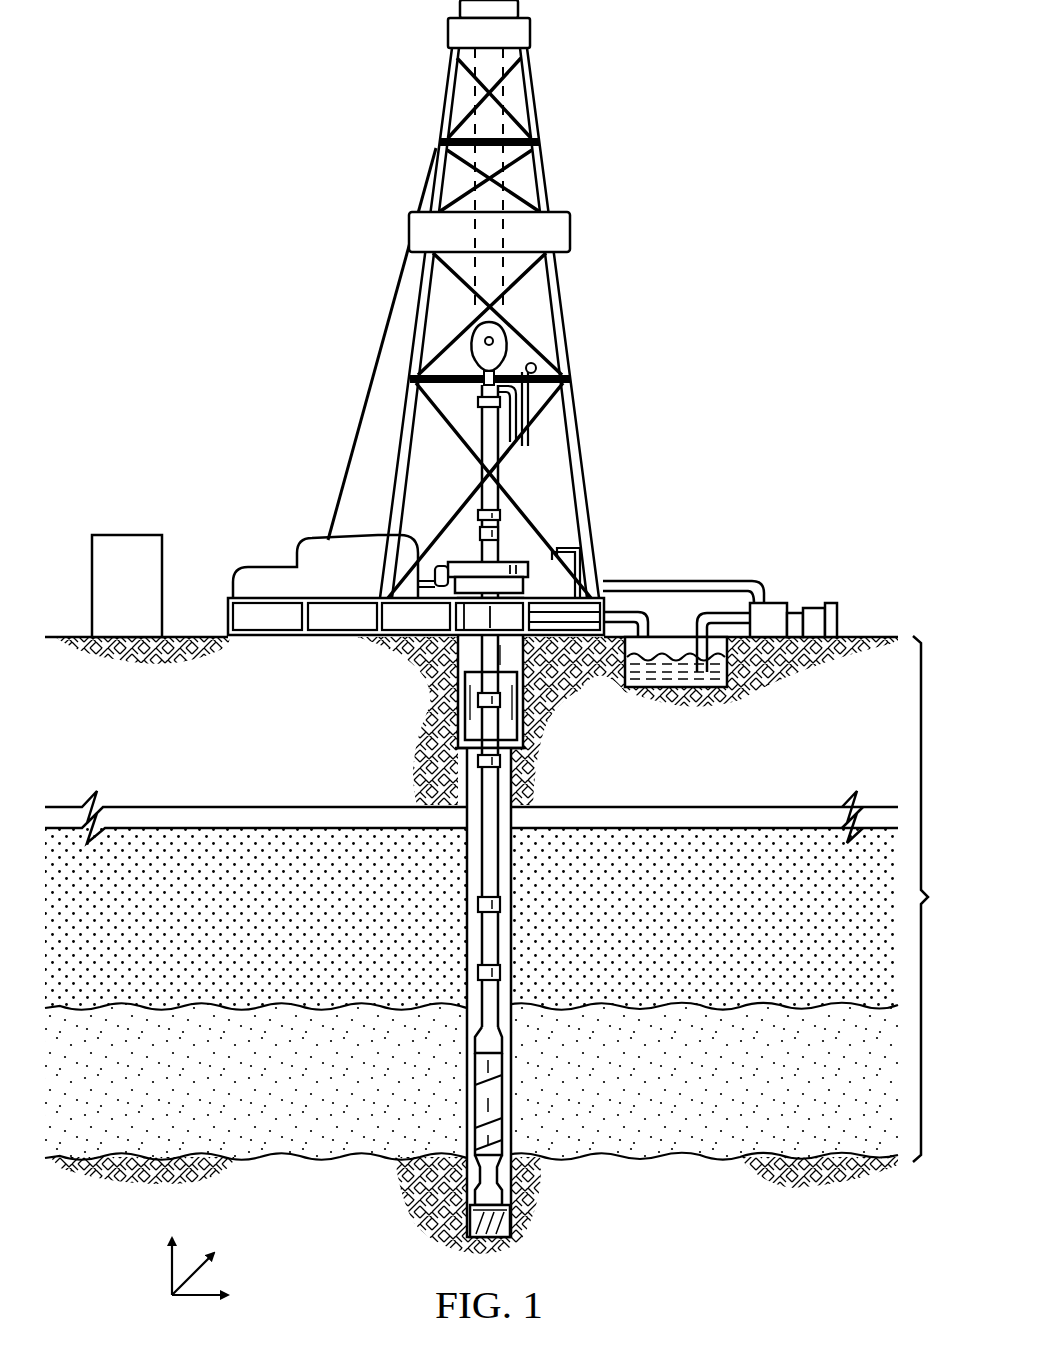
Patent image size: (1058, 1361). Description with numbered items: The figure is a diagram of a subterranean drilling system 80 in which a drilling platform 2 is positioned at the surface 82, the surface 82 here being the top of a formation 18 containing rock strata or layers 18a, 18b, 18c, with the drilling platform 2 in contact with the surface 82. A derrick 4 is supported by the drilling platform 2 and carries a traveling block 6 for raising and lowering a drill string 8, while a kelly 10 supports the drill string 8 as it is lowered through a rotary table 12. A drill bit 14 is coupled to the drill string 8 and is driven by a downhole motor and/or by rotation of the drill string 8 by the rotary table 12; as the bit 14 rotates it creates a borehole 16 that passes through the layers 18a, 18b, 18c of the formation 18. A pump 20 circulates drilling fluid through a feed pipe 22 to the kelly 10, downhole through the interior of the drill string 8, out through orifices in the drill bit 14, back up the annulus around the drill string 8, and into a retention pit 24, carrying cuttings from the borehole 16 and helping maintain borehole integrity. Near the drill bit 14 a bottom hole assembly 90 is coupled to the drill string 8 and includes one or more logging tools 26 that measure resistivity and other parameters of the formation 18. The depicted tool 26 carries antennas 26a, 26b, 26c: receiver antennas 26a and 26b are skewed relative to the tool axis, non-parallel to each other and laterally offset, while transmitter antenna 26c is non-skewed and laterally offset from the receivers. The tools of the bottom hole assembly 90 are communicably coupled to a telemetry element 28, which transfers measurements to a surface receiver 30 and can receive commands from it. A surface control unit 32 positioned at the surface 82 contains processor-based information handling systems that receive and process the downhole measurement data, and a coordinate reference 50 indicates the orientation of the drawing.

The drilling platform 2 is at (228, 617).
The derrick 4 is at (544, 127).
The traveling block 6 is at (505, 352).
The drill string 8 is at (511, 778).
The kelly 10 is at (478, 415).
The rotary table 12 is at (470, 560).
The drill bit 14 is at (512, 1222).
The borehole 16 is at (510, 884).
The formation 18 is at (504, 899).
The rock stratum or layer 18a is at (803, 1100).
The rock stratum or layer 18b is at (695, 936).
The rock stratum or layer 18c is at (695, 768).
The pump 20 is at (775, 603).
The feed pipe 22 is at (675, 581).
The retention pit 24 is at (665, 657).
The logging tool 26 is at (453, 1043).
The receiver antenna 26a is at (488, 1076).
The receiver antenna 26b is at (488, 1118).
The transmitter antenna 26c is at (500, 1148).
The telemetry element 28 is at (500, 1047).
The surface receiver 30 is at (500, 515).
The surface control unit 32 is at (147, 601).
The coordinate system 50 is at (172, 1272).
The subterranean drilling system 80 is at (277, 177).
The surface 82 is at (72, 637).
The bottom hole assembly 90 is at (628, 1090).